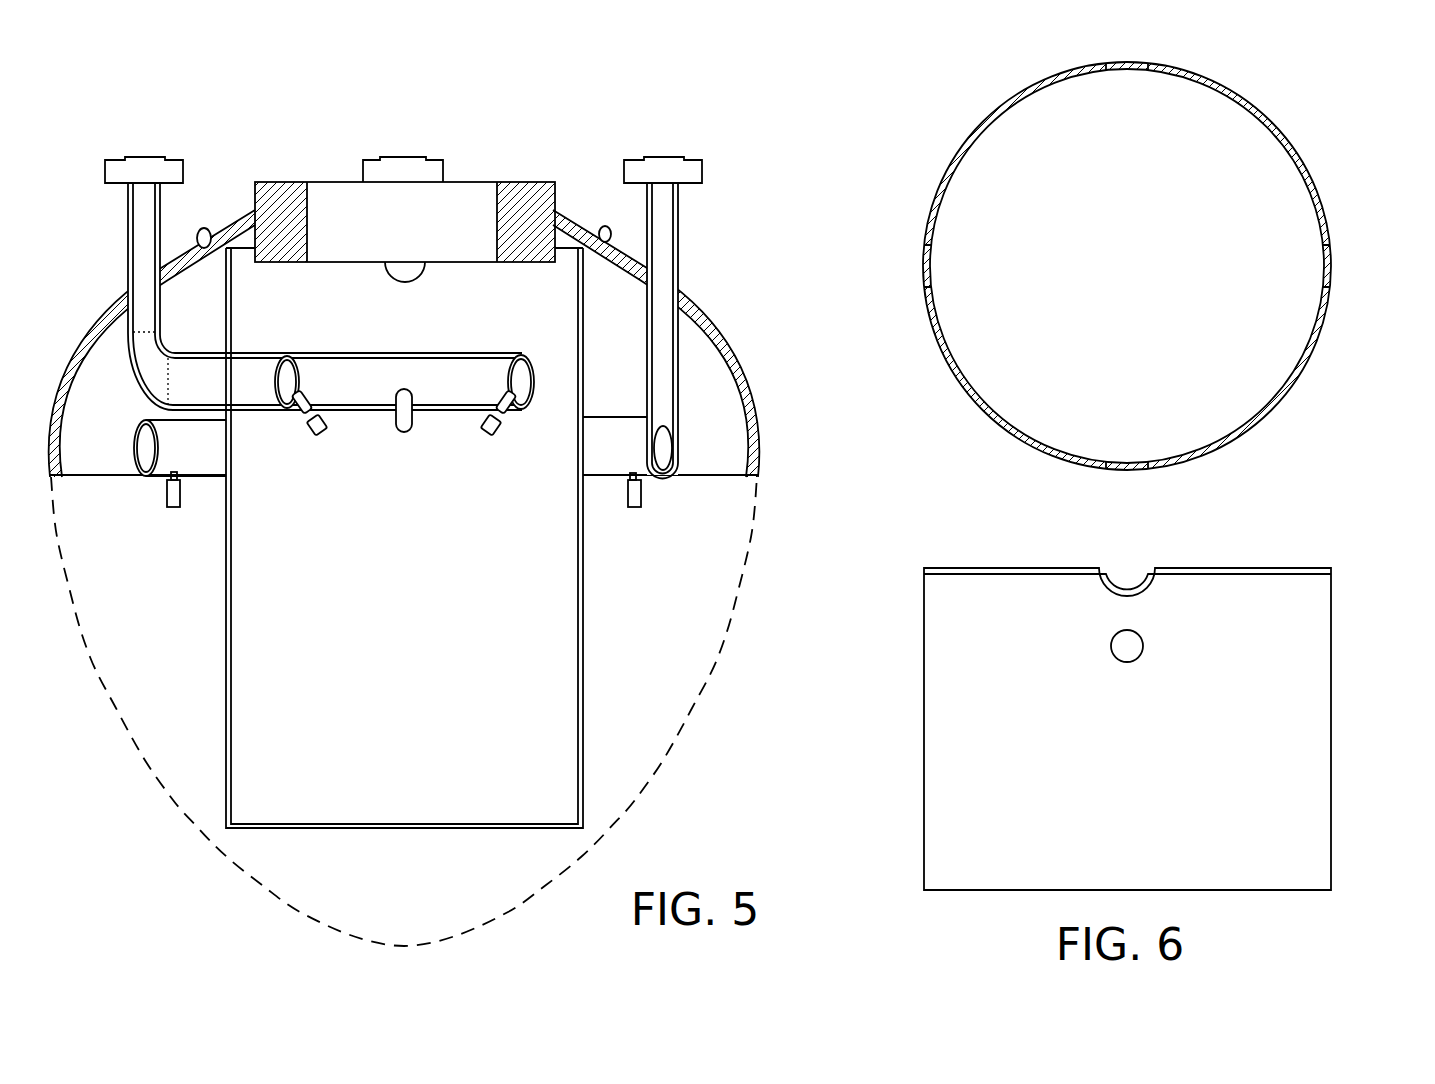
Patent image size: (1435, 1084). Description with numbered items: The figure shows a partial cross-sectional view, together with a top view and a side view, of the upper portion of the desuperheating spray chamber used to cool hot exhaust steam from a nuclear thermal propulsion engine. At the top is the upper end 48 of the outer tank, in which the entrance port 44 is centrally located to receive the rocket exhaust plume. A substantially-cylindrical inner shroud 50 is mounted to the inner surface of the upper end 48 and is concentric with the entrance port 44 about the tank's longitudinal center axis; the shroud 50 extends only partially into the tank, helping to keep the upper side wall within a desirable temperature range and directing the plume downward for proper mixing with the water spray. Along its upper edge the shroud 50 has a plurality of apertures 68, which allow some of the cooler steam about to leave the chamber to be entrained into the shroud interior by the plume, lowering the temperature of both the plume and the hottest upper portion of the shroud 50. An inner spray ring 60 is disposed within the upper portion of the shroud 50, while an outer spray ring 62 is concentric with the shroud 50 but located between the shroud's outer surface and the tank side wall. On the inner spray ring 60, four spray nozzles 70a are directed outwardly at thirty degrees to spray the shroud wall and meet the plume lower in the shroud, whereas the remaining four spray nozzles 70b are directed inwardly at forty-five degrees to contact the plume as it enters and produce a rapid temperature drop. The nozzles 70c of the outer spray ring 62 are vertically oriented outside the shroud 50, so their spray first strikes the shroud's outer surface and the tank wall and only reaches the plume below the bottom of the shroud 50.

In FIG. 5, the entrance port 44 is at (485, 222).
In FIG. 5, the upper end 48 is at (718, 322).
In FIG. 5, the inner shroud 50 is at (222, 743).
In FIG. 6, the inner shroud 50 is at (964, 121).
In FIG. 5, the inner spray ring 60 is at (365, 352).
In FIG. 5, the outer spray ring 62 is at (132, 458).
In FIG. 5, the apertures 68 is at (218, 287).
In FIG. 6, the apertures 68 is at (1141, 58).
In FIG. 5, the outwardly angled spray nozzles 70a is at (322, 433).
In FIG. 5, the inwardly angled spray nozzles 70b is at (285, 431).
In FIG. 5, the spray nozzles of the outer spray ring 70c is at (177, 508).